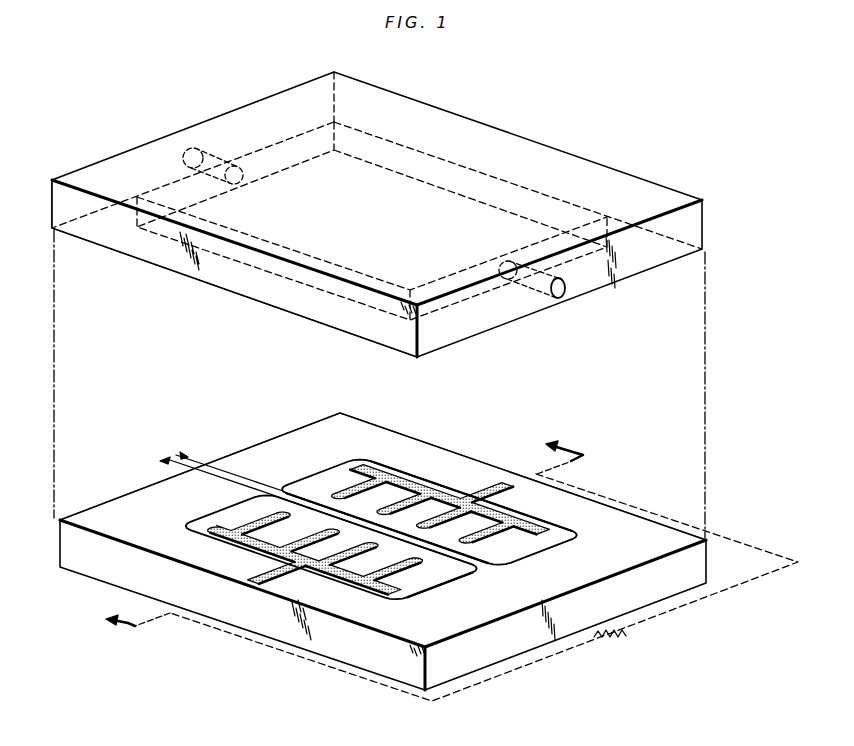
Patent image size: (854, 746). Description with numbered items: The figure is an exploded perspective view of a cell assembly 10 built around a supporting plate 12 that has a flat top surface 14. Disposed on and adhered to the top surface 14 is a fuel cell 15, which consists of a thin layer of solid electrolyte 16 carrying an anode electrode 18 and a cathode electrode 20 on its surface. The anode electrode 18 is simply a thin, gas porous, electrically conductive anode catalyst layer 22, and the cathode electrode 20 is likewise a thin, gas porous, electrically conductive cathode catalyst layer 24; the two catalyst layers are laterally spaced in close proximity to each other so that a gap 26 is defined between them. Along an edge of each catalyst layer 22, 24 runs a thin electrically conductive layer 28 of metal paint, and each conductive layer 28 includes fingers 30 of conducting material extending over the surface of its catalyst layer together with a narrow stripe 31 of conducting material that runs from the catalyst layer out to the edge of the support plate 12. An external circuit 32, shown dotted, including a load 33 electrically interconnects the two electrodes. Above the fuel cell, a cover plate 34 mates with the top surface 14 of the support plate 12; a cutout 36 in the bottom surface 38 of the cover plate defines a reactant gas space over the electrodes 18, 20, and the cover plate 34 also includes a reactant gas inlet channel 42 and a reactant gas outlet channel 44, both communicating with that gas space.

The cell assembly 10 is at (712, 142).
The supporting plate 12 is at (702, 568).
The flat top surface 14 is at (122, 500).
The fuel cell 15 is at (580, 524).
The solid electrolyte 16 is at (487, 570).
The anode electrode 18 is at (440, 584).
The cathode electrode 20 is at (348, 472).
The anode catalyst layer 22 is at (395, 592).
The cathode catalyst layer 24 is at (395, 492).
The gap 26 is at (177, 455).
The electrically conductive layer 28 is at (522, 510).
The fingers 30 is at (275, 520).
The narrow stripe 31 is at (495, 487).
The external circuit 32 is at (520, 671).
The load 33 is at (622, 639).
The cover plate 34 is at (706, 216).
The cutout 36 is at (492, 176).
The bottom surface 38 is at (112, 237).
The reactant gas inlet channel 42 is at (566, 296).
The reactant gas outlet channel 44 is at (186, 150).